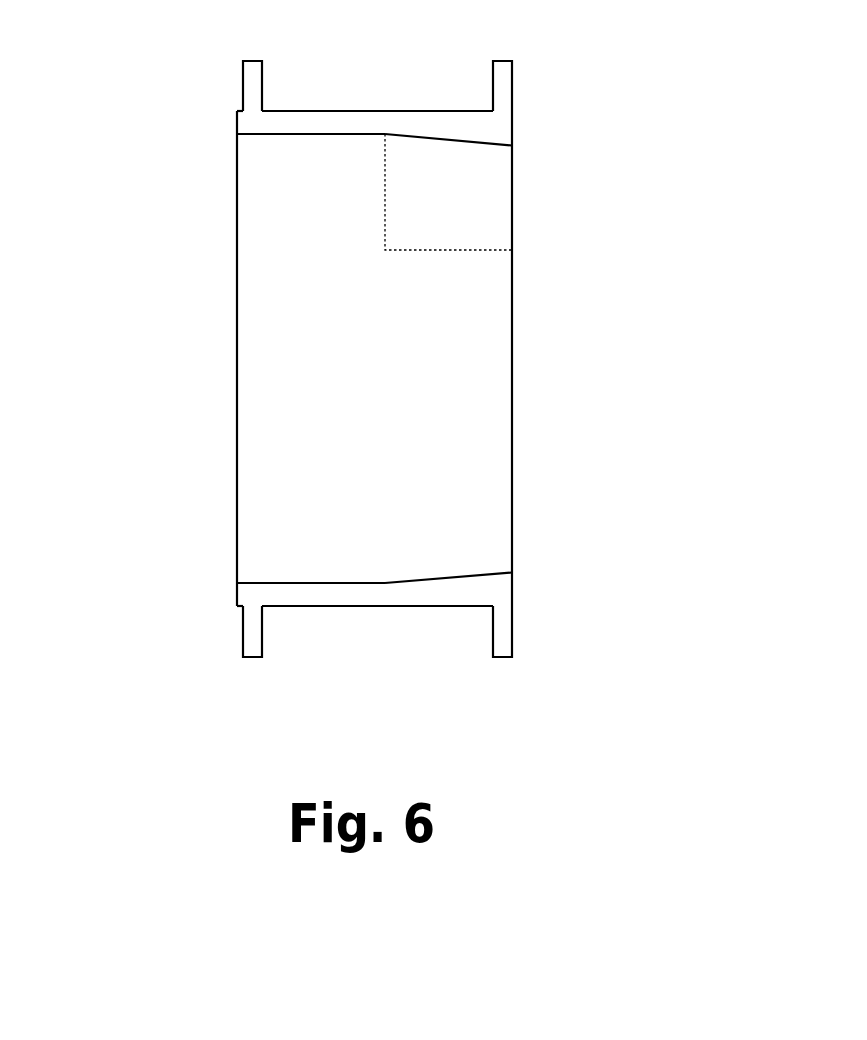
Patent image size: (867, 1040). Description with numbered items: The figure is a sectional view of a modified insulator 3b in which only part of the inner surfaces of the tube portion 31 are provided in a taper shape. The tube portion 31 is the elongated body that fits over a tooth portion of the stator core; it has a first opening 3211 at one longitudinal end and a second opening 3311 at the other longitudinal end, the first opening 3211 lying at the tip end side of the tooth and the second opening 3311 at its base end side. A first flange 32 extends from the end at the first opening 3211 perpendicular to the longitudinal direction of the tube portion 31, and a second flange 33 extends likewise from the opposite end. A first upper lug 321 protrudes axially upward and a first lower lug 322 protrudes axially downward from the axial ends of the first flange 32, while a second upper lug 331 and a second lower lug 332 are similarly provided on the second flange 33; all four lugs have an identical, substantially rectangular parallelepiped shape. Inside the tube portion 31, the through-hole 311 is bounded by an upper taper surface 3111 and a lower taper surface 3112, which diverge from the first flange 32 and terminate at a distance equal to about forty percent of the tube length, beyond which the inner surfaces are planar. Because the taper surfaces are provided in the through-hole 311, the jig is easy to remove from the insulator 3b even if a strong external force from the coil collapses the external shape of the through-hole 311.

The insulator 3b is at (597, 97).
The tube portion 31 is at (315, 590).
The through-hole 311 is at (267, 198).
The upper taper surface 3111 is at (445, 142).
The lower taper surface 3112 is at (455, 573).
The first flange 32 is at (513, 119).
The first upper lug 321 is at (503, 88).
The first lower lug 322 is at (503, 617).
The first opening 3211 is at (512, 365).
The second flange 33 is at (237, 592).
The second upper lug 331 is at (252, 82).
The second lower lug 332 is at (252, 627).
The second opening 3311 is at (236, 350).